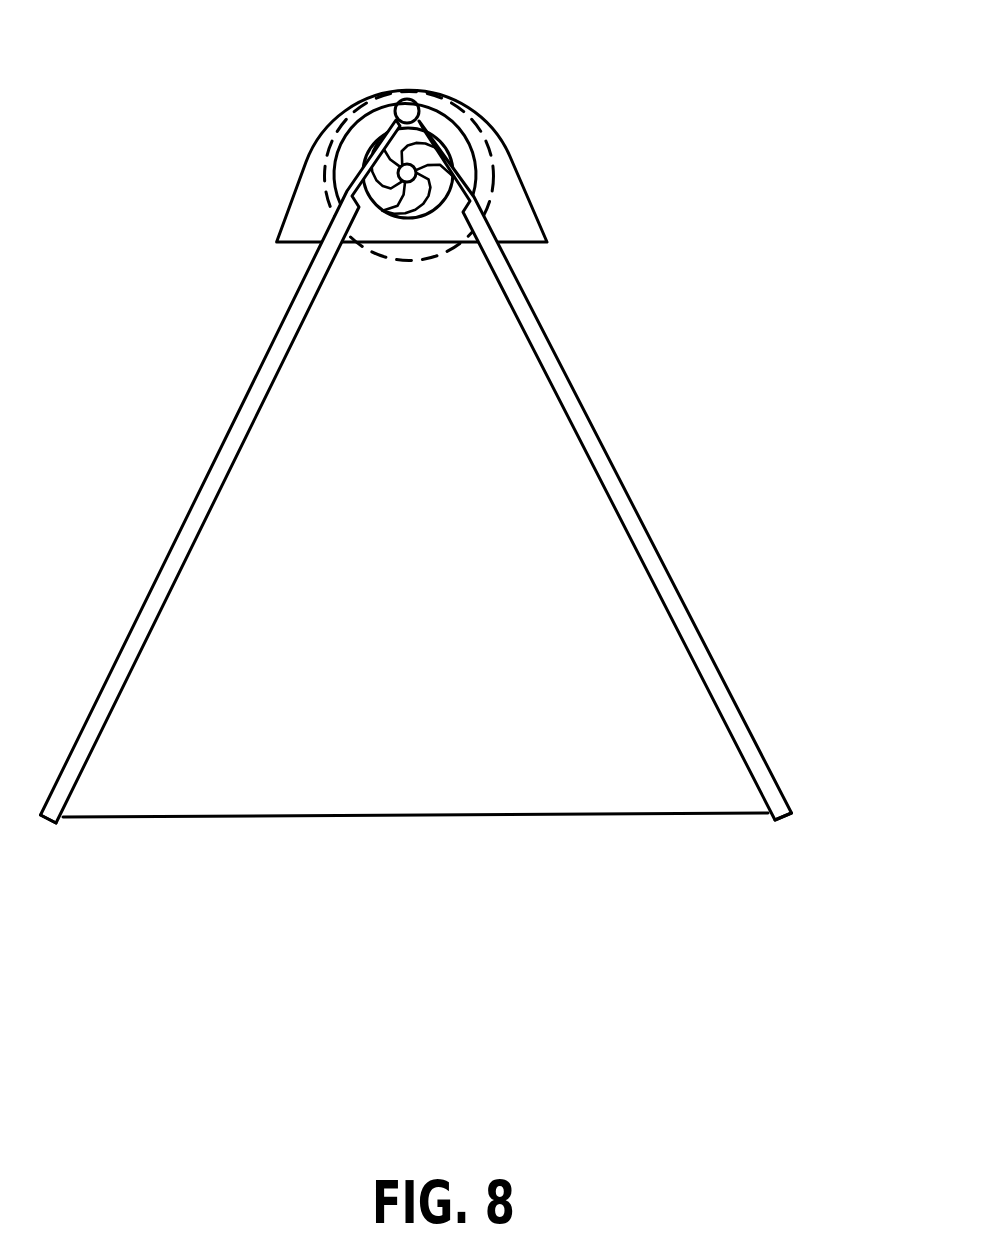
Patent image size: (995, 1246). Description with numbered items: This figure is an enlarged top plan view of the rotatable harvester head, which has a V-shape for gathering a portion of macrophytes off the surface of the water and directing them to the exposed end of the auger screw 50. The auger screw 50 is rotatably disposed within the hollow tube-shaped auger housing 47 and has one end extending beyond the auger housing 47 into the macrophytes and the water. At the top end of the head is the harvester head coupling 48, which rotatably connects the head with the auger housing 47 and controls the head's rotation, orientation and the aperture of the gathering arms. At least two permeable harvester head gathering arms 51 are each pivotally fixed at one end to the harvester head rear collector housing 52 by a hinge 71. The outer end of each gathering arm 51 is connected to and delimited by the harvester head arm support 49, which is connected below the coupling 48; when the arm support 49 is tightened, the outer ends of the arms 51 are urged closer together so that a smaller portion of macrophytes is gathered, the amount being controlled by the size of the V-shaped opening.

The auger housing 47 is at (394, 219).
The harvester head coupling 48 is at (406, 266).
The harvester head arm support 49 is at (161, 571).
The auger screw 50 is at (418, 169).
The harvester head gathering arms 51 is at (209, 513).
The harvester head rear collector housing 52 is at (292, 203).
The hinge 71 is at (403, 93).